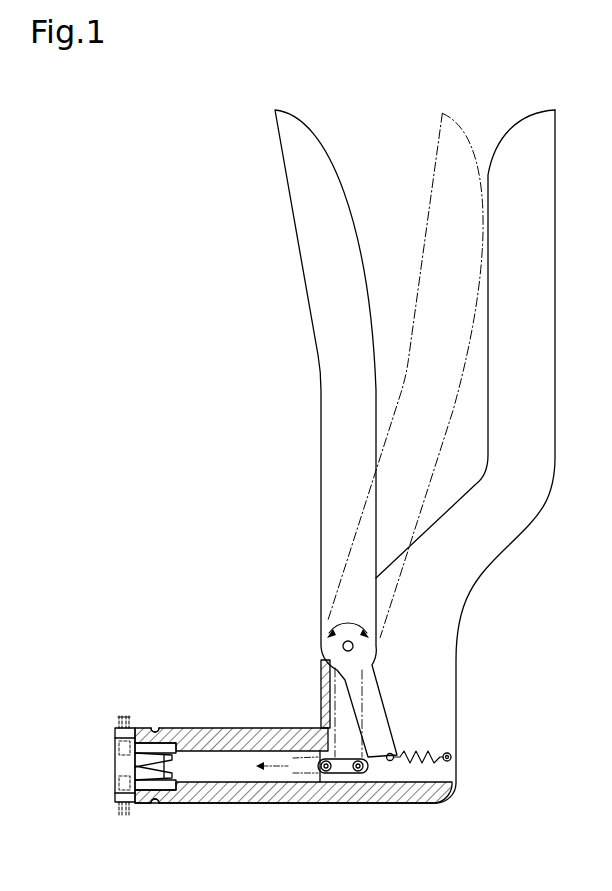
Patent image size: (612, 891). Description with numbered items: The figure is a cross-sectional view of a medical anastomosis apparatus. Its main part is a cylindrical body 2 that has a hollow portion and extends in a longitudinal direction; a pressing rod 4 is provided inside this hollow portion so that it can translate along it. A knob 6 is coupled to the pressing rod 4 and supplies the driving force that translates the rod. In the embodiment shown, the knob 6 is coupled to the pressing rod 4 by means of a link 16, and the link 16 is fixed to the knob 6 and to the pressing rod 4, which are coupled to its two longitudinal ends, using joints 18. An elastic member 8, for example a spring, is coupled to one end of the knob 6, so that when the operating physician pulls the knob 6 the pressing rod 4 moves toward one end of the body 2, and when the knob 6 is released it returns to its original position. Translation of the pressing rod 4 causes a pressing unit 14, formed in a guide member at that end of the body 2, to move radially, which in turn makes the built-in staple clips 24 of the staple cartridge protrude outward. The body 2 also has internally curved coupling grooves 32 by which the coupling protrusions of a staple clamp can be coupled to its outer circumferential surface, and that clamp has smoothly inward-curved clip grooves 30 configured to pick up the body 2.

The body 2 is at (203, 720).
The pressing rod 4 is at (230, 768).
The knob 6 is at (330, 428).
The elastic member 8 is at (423, 763).
The pressing unit 14 is at (117, 781).
The link 16 is at (325, 736).
The joints 18 is at (360, 775).
The staple clips 24 is at (121, 720).
The clip grooves 30 is at (115, 709).
The coupling grooves 32 is at (155, 726).